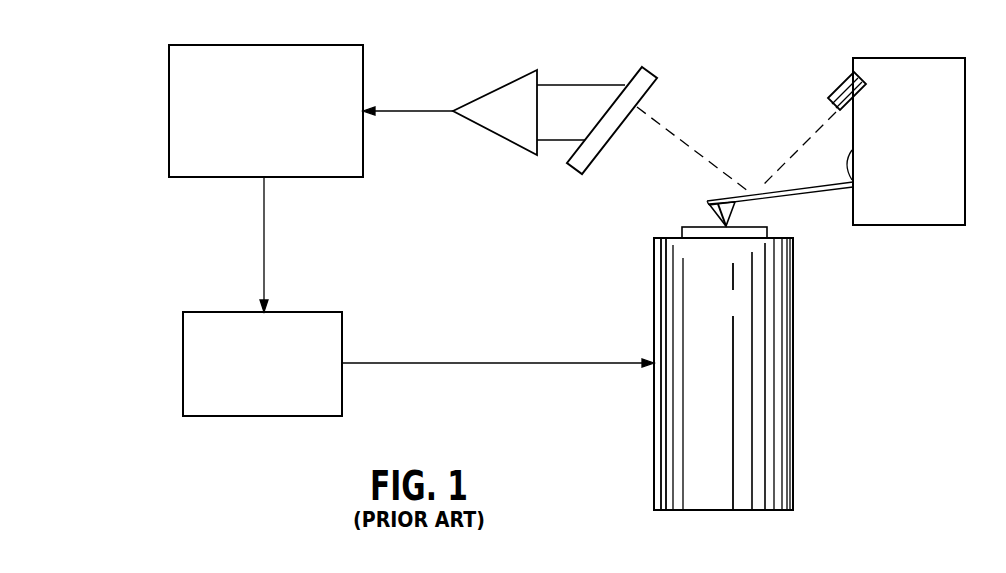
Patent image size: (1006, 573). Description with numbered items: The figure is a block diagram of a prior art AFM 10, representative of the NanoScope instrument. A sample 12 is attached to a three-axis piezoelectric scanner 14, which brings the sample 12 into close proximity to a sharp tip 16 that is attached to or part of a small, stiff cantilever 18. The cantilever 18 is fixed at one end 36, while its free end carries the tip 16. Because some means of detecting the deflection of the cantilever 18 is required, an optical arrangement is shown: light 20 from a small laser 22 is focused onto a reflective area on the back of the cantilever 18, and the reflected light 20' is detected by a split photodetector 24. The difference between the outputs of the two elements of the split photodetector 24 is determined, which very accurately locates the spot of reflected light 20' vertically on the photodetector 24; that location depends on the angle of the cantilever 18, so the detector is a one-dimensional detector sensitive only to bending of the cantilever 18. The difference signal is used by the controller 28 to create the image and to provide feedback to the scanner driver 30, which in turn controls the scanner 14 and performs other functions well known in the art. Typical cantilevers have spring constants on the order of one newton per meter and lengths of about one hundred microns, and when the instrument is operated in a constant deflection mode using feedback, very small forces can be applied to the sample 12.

The prior art AFM 10 is at (870, 293).
The sample 12 is at (695, 227).
The three-axis piezoelectric scanner 14 is at (773, 382).
The sharp tip 16 is at (734, 206).
The cantilever 18 is at (823, 188).
The light 20 is at (794, 150).
The reflected light 20' is at (692, 142).
The laser 22 is at (843, 84).
The split photodetector 24 is at (655, 69).
The controller 28 is at (366, 83).
The scanner driver 30 is at (344, 341).
The fixed end of cantilever 36 is at (855, 152).